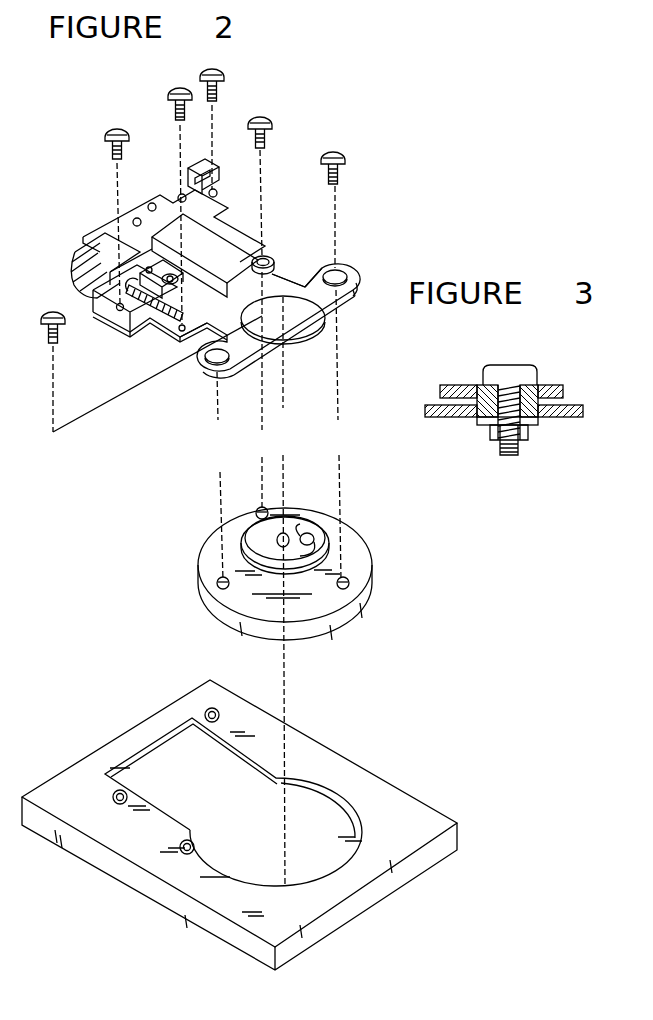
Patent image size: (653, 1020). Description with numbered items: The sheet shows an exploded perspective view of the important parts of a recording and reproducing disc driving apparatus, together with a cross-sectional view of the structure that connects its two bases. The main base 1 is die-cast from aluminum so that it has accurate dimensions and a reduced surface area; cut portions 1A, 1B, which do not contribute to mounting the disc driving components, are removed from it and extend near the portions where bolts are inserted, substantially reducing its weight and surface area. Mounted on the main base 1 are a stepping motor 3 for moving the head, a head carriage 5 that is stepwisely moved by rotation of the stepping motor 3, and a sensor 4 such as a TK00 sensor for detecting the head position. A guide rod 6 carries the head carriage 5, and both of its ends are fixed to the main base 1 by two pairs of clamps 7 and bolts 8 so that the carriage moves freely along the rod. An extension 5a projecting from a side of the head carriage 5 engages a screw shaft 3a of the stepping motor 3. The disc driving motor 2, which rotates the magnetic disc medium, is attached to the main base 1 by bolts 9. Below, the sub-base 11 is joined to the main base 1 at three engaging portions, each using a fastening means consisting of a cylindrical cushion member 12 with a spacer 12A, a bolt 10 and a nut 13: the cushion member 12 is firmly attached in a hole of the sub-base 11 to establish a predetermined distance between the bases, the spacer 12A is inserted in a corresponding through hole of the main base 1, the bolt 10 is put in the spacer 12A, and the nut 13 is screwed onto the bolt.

In FIG. 2, the main base 1 is at (92, 312).
In FIG. 3, the main base 1 is at (555, 385).
In FIG. 2, the cut portion 1A is at (296, 281).
In FIG. 2, the cut portion 1B is at (180, 344).
In FIG. 2, the disc driving motor 2 is at (352, 533).
In FIG. 2, the stepping motor 3 is at (74, 250).
In FIG. 2, the screw shaft 3a is at (160, 312).
In FIG. 2, the sensor 4 is at (198, 166).
In FIG. 2, the head carriage 5 is at (166, 196).
In FIG. 2, the extension 5a is at (120, 324).
In FIG. 2, the guide rod 6 is at (256, 256).
In FIG. 2, the clamp 7 is at (274, 273).
In FIG. 2, the bolt 8 is at (292, 255).
In FIG. 2, the bolt 9 is at (271, 126).
In FIG. 2, the bolt 10 is at (107, 150).
In FIG. 3, the bolt 10 is at (528, 368).
In FIG. 2, the sub-base 11 is at (338, 757).
In FIG. 3, the sub-base 11 is at (580, 416).
In FIG. 2, the cylindrical cushion member 12 is at (220, 710).
In FIG. 3, the cylindrical cushion member 12 is at (537, 422).
In FIG. 3, the spacer 12A is at (482, 440).
In FIG. 3, the nut 13 is at (521, 456).